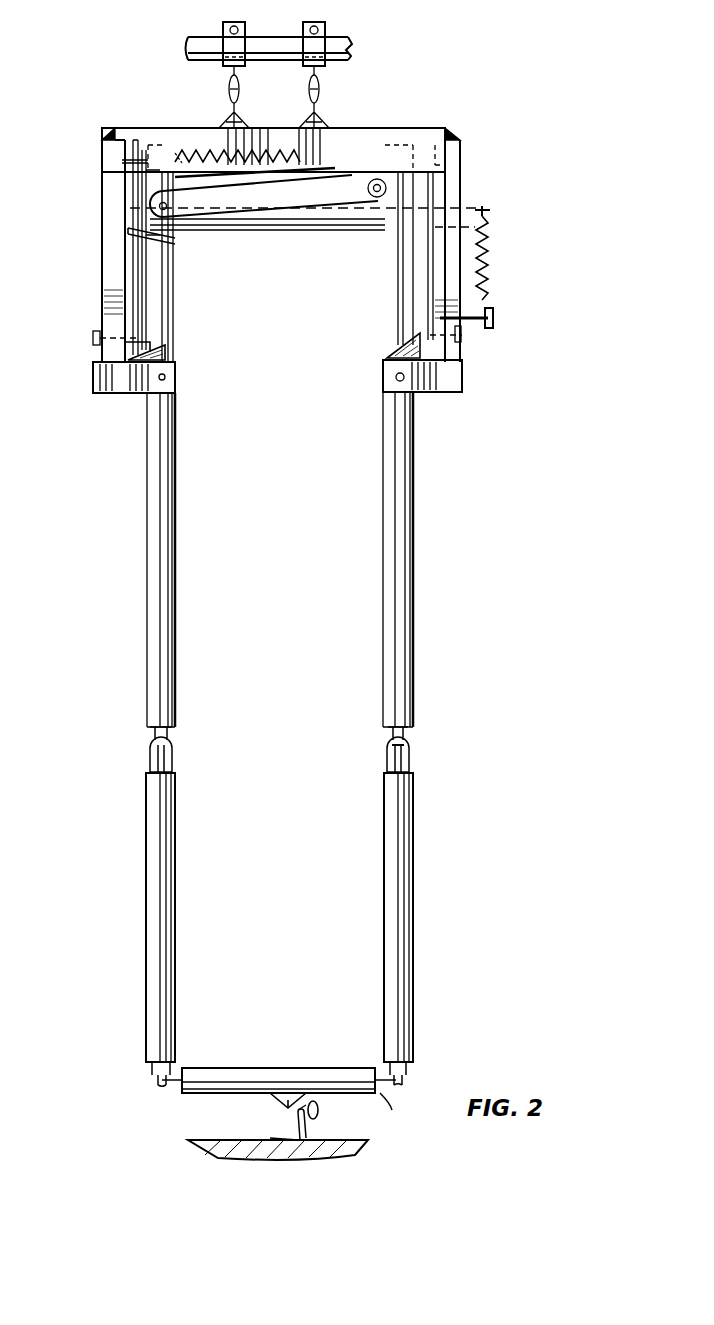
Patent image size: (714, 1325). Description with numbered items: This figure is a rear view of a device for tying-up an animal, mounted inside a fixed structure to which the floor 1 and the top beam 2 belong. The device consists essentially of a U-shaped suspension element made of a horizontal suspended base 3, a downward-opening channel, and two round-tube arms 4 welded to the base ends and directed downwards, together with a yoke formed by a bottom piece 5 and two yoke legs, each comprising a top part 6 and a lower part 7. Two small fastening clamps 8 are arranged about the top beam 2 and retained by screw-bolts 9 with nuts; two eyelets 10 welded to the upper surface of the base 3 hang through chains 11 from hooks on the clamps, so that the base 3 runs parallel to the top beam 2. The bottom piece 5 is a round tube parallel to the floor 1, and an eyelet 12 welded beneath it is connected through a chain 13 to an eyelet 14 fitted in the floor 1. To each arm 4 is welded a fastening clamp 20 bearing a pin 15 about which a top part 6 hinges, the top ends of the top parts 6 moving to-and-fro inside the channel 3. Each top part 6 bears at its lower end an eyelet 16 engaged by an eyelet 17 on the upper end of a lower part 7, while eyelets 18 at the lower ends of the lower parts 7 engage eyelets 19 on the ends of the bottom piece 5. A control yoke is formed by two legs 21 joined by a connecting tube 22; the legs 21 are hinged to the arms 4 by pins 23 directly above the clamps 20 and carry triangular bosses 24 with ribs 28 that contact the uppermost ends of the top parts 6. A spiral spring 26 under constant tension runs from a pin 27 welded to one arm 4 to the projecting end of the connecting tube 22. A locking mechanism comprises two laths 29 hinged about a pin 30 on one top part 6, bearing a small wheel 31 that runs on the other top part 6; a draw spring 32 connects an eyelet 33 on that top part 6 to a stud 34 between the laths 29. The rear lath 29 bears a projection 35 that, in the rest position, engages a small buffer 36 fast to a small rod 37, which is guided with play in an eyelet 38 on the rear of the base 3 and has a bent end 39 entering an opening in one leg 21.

The floor 1 is at (198, 1140).
The top beam 2 is at (205, 45).
The base 3 is at (400, 130).
The arm 4 is at (100, 130).
The bottom piece 5 is at (228, 1080).
The top part 6 is at (158, 545).
The lower part 7 is at (166, 924).
The small fastening clamp 8 is at (326, 36).
The screw-bolt 9 is at (303, 26).
The eyelet 10 is at (302, 126).
The chain 11 is at (229, 92).
The eyelet 12 is at (276, 1100).
The chain 13 is at (320, 1110).
The eyelet 14 is at (280, 1138).
The pin 15 is at (166, 378).
The eyelet 16 is at (406, 736).
The eyelet 17 is at (392, 752).
The eyelet 18 is at (408, 1080).
The eyelet 19 is at (400, 1107).
The fastening clamp 20 is at (440, 386).
The leg 21 is at (425, 270).
The connecting tube 22 is at (488, 212).
The pin 23 is at (462, 345).
The boss 24 is at (392, 350).
The spiral spring 26 is at (487, 272).
The pin 27 is at (495, 318).
The rib 28 is at (160, 350).
The lath 29 is at (360, 190).
The pin 30 is at (158, 206).
The small wheel 31 is at (375, 212).
The draw spring 32 is at (282, 152).
The eyelet 33 is at (176, 150).
The stud 34 is at (326, 170).
The projection 35 is at (165, 246).
The small buffer 36 is at (130, 240).
The small rod 37 is at (131, 182).
The eyelet 38 is at (120, 161).
The bent end 39 is at (148, 340).